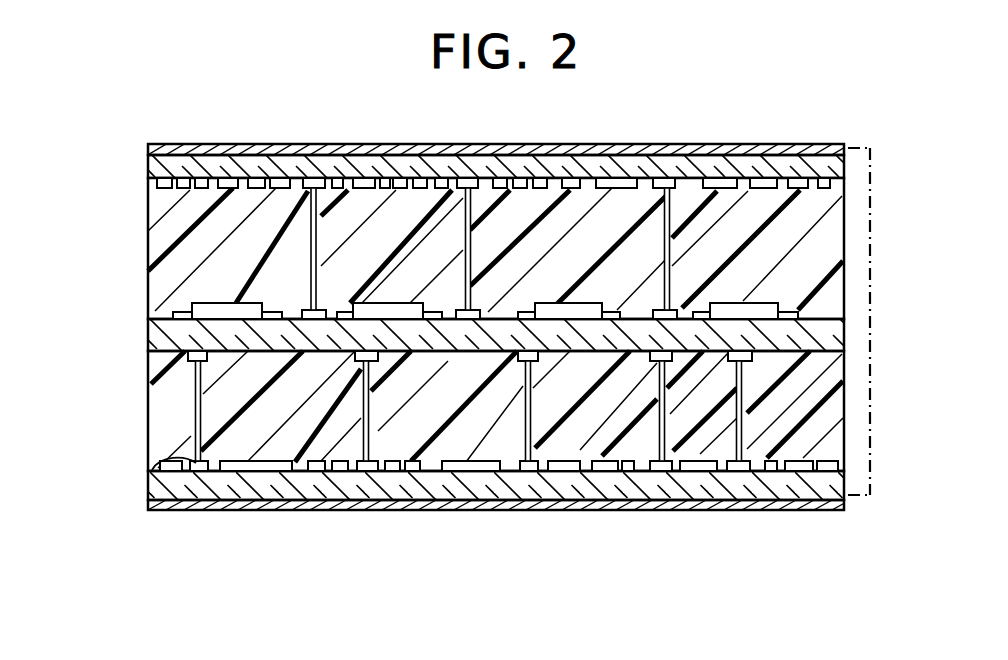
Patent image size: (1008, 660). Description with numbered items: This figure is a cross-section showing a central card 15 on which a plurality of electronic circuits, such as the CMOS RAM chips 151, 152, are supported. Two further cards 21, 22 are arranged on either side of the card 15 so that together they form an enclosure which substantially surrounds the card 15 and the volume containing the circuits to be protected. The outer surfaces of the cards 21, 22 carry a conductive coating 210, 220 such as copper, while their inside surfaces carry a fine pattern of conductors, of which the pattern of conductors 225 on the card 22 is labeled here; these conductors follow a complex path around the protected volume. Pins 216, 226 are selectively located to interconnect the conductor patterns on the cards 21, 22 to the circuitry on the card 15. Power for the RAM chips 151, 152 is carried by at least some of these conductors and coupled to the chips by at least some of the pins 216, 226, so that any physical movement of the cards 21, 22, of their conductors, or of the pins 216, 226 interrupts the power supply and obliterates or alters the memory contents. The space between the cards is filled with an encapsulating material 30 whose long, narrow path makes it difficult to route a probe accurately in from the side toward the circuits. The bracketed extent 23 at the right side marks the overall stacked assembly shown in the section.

The conductive coating 210 is at (248, 144).
The card 21 is at (150, 167).
The encapsulating material 30 is at (166, 243).
The pin 216 is at (321, 247).
The electronic circuit 151 is at (212, 303).
The electronic circuit 152 is at (384, 303).
The card 15 is at (148, 340).
The pin 226 is at (370, 410).
The pattern of conductors 225 is at (152, 463).
The card 22 is at (150, 490).
The conductive coating 220 is at (246, 511).
The circuit board section 23 is at (872, 265).